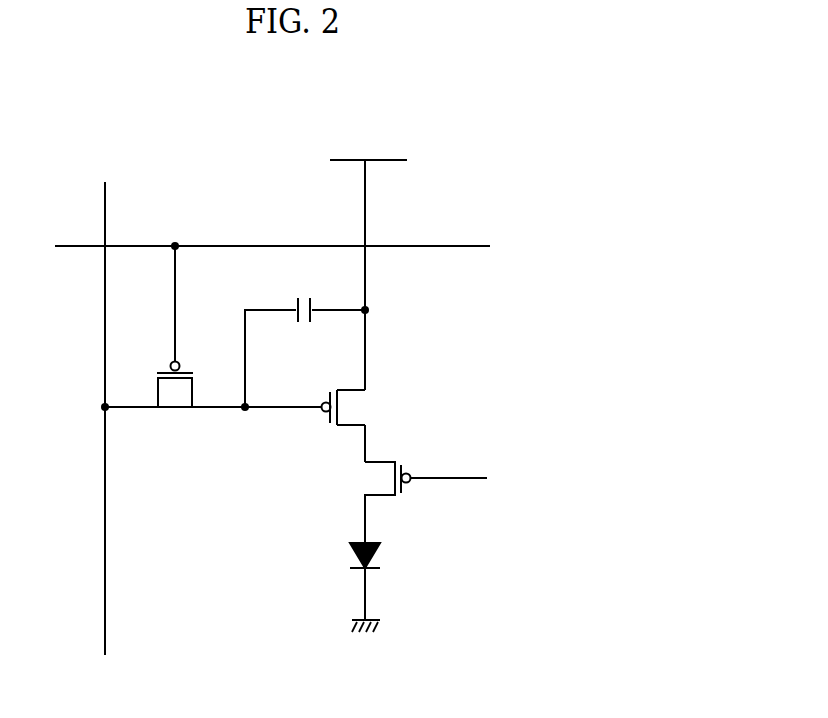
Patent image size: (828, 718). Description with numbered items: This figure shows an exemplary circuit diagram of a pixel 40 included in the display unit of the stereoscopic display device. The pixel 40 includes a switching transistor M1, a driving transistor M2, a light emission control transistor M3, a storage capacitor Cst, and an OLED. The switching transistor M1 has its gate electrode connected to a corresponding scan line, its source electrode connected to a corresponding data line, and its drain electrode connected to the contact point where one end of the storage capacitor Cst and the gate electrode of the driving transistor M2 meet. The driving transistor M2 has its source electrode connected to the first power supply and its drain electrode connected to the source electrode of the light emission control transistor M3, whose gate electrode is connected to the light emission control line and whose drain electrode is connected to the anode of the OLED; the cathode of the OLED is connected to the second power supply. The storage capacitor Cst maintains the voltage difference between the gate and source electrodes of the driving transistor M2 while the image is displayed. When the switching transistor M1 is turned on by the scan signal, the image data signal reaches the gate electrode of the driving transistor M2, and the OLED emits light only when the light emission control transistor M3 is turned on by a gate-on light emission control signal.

The pixel 40 is at (471, 151).
The switching transistor M1 is at (175, 345).
The driving transistor M2 is at (363, 426).
The light emission control transistor M3 is at (410, 502).
The storage capacitor Cst is at (305, 352).
The element OLED is at (400, 578).